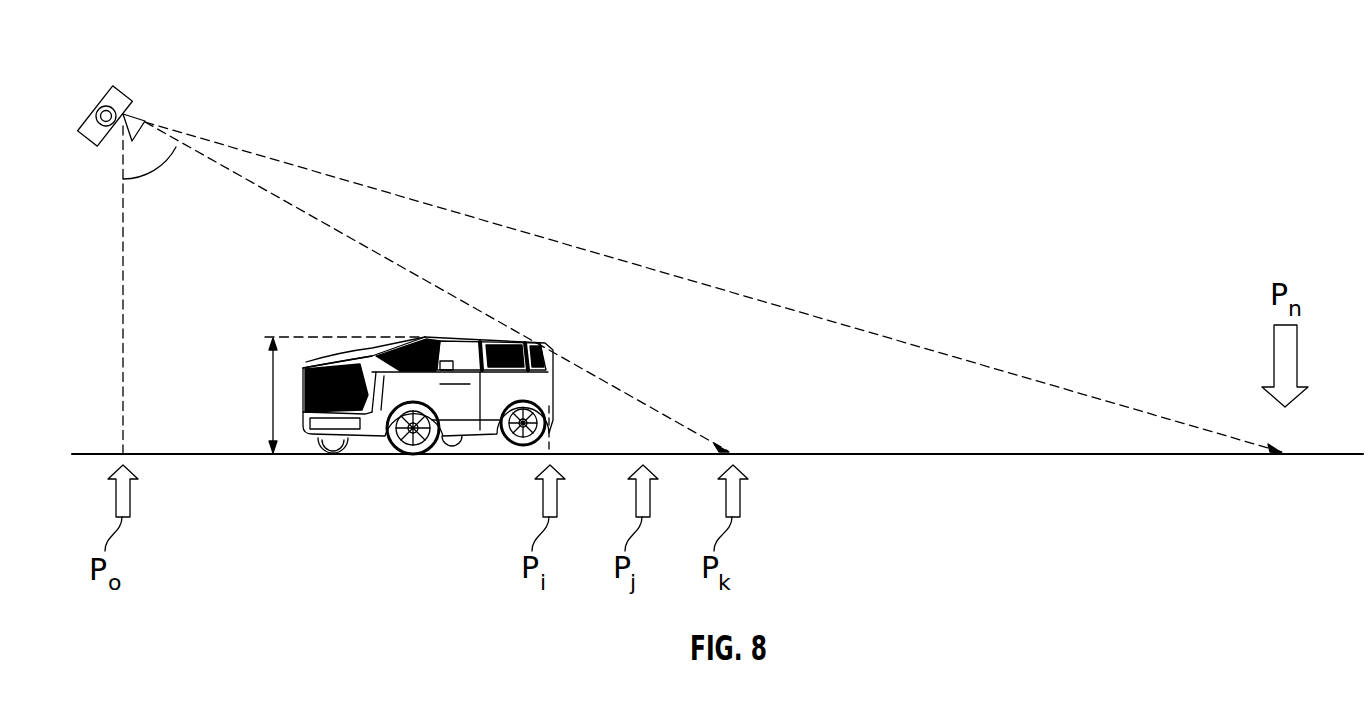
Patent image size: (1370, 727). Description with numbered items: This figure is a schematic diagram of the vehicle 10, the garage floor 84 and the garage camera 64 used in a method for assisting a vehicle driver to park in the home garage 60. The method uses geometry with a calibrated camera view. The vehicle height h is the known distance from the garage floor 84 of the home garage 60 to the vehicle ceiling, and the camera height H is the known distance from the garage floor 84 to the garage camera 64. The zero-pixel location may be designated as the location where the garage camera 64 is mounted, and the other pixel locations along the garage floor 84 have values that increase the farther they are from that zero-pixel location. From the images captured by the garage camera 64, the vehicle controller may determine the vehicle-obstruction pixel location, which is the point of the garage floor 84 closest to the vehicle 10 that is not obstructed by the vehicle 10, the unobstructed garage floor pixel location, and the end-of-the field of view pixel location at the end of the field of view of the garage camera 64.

The vehicle 10 is at (412, 337).
The home garage 60 is at (806, 111).
The garage camera 64 is at (125, 95).
The garage floor 84 is at (1311, 454).